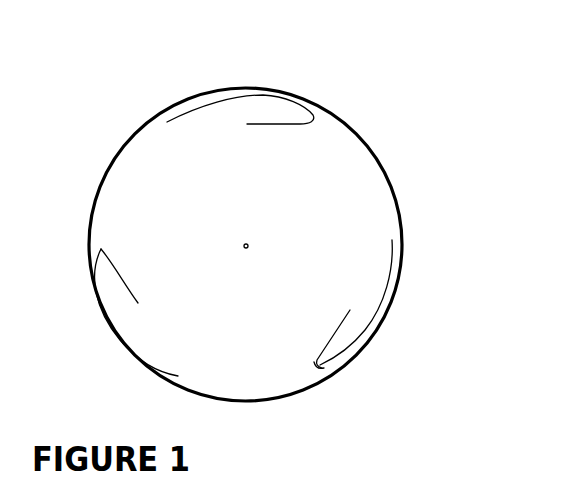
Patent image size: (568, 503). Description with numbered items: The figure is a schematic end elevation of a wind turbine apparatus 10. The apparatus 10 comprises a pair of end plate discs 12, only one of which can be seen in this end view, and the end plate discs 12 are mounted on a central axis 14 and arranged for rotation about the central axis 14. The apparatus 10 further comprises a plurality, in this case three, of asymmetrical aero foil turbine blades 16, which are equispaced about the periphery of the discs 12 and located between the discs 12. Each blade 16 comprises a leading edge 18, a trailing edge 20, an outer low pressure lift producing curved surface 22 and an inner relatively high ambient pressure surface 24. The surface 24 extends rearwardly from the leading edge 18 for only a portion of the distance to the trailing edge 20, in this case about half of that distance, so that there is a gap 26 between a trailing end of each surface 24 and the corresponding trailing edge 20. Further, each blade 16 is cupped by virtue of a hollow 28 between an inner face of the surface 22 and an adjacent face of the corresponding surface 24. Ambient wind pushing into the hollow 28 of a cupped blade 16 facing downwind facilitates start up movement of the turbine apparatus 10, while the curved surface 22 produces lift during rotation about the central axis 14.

The wind turbine apparatus 10 is at (264, 224).
The end plate disc 12 is at (112, 161).
The central axis 14 is at (244, 245).
The asymmetrical aero foil turbine blade 16 is at (247, 89).
The leading edge 18 is at (320, 366).
The trailing edge 20 is at (245, 331).
The outer low pressure lift producing curved surface 22 is at (239, 331).
The inner relatively high pressure surface 24 is at (343, 322).
The gap 26 is at (146, 331).
The hollow 28 is at (212, 331).